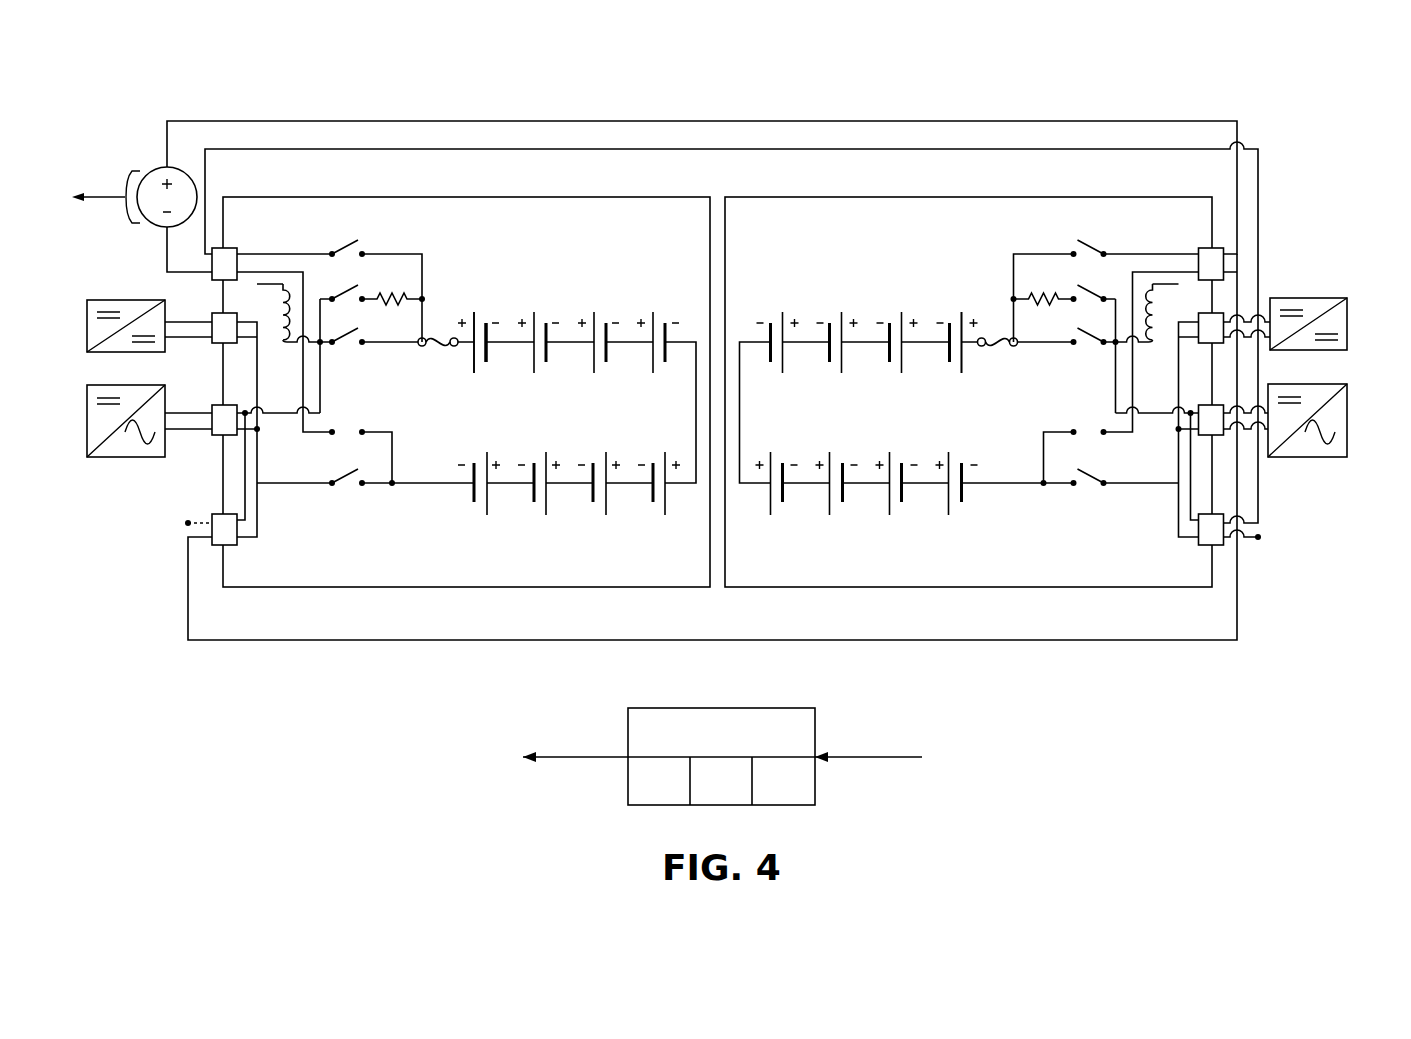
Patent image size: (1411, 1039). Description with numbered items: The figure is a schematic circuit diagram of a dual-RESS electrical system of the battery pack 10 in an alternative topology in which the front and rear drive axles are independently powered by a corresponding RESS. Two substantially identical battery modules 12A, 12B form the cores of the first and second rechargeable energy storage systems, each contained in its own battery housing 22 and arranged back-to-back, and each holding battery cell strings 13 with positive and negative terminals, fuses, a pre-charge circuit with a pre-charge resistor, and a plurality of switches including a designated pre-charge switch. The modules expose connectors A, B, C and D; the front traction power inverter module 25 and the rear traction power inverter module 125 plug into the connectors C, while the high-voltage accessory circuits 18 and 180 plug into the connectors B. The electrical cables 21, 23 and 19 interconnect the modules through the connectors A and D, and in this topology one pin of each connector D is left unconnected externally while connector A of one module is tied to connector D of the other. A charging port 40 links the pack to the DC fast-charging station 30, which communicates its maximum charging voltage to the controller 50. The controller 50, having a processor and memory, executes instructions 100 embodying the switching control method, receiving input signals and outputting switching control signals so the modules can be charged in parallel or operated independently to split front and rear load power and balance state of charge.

The battery pack 10 is at (1290, 95).
The third electrical cable 21 is at (165, 247).
The fourth electrical cable 23 is at (962, 150).
The second electrical cable 19 is at (1046, 639).
The battery housing 22 is at (604, 196).
The first battery module 12A is at (601, 251).
The second battery module 12B is at (829, 251).
The battery cell string 13 is at (472, 356).
The DC fast charging port / charger 40 is at (147, 176).
The DC fast-charging station 30 is at (81, 198).
The high-voltage accessory circuit 18 is at (86, 332).
The front traction power inverter module 25 is at (86, 449).
The high-voltage accessory circuit 180 is at (1348, 325).
The rear traction power inverter module 125 is at (1348, 448).
The controller 50 is at (733, 746).
The instructions 100 is at (665, 781).